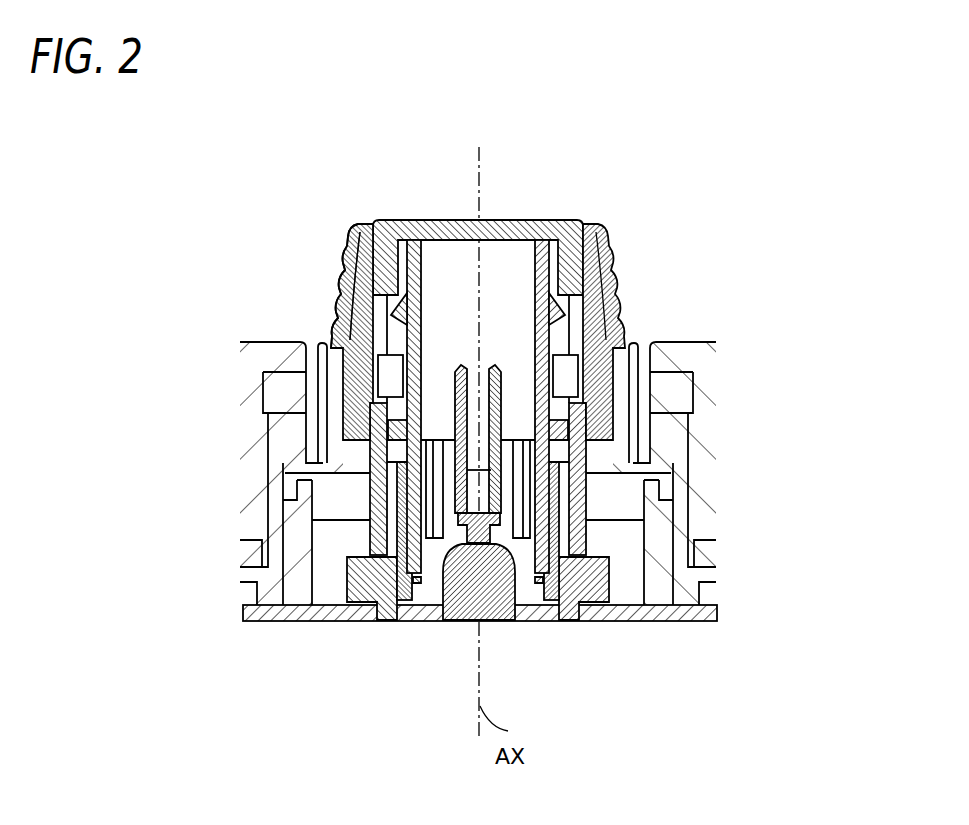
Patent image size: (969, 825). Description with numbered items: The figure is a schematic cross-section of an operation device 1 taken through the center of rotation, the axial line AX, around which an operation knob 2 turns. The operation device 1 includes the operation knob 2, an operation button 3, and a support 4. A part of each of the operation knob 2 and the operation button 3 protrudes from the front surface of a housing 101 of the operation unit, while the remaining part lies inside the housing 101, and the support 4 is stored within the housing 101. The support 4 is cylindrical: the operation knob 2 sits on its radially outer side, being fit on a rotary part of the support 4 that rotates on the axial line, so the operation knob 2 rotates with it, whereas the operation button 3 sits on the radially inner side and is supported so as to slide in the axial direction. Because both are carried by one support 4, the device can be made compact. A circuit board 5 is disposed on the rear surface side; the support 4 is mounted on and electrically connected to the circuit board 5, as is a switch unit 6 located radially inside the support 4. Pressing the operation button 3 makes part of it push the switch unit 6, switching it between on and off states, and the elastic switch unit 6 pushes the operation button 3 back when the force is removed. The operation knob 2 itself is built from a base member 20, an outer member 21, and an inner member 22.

The operation device 1 is at (616, 191).
The operation knob 2 is at (356, 219).
The operation button 3 is at (542, 220).
The support 4 is at (373, 580).
The circuit board 5 is at (620, 623).
The switch unit 6 is at (442, 620).
The base member 20 is at (347, 268).
The outer member 21 is at (338, 322).
The inner member 22 is at (358, 237).
The housing 101 is at (690, 343).